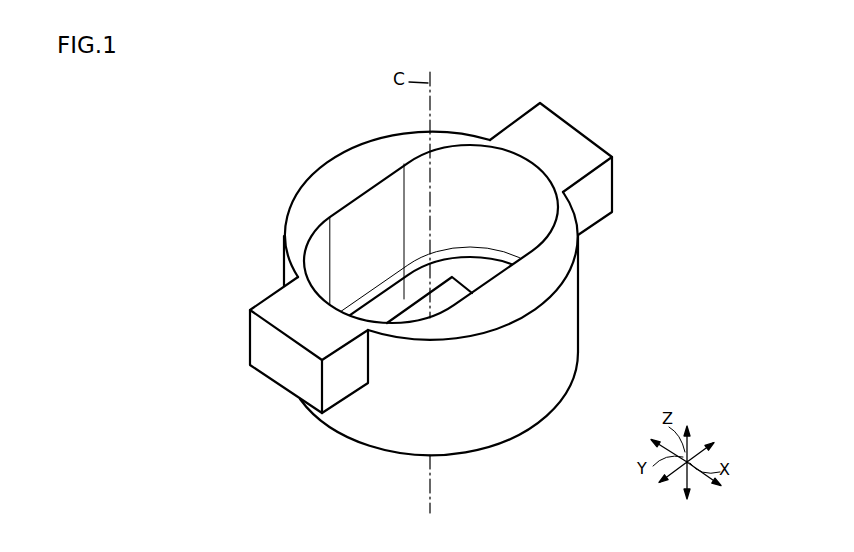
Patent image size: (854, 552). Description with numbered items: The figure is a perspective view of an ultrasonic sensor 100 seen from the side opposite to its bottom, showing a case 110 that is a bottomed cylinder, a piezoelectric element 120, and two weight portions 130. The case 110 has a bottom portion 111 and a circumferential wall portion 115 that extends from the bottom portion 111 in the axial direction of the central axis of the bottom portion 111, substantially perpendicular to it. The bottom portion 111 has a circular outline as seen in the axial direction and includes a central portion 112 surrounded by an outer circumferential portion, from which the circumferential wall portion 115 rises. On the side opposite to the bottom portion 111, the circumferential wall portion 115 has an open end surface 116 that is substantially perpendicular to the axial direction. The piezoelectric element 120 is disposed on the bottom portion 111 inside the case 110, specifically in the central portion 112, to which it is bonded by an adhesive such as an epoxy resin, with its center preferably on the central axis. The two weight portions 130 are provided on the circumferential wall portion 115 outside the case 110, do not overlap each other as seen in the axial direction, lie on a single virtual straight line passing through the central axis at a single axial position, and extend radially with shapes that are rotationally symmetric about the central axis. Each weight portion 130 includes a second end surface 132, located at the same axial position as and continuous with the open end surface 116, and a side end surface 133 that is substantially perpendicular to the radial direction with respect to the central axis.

The ultrasonic sensor 100 is at (683, 149).
The case 110 is at (565, 333).
The bottom portion 111 is at (390, 300).
The central portion 112 is at (367, 247).
The circumferential wall portion 115 is at (523, 365).
The open end surface 116 is at (518, 292).
The piezoelectric element 120 is at (452, 277).
The weight portion 130 is at (602, 192).
The second end surface 132 is at (563, 135).
The side end surface 133 is at (283, 371).